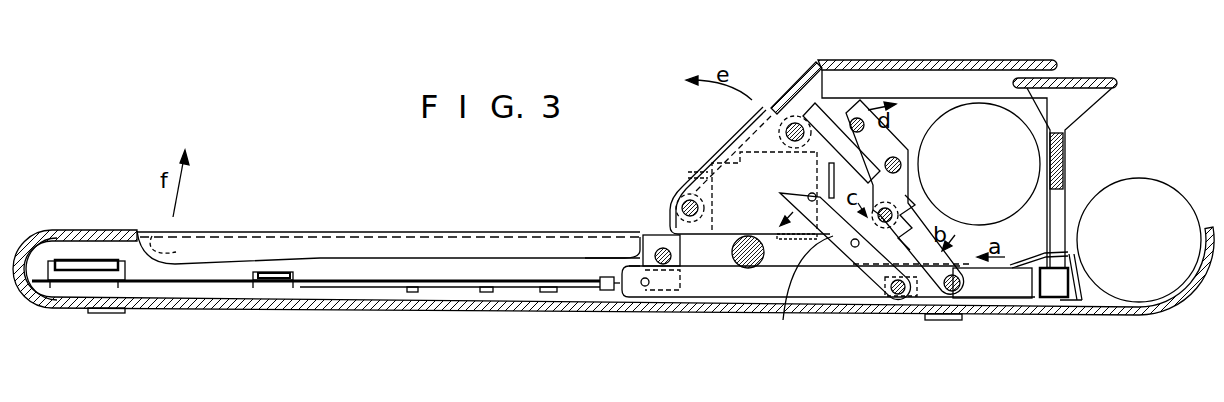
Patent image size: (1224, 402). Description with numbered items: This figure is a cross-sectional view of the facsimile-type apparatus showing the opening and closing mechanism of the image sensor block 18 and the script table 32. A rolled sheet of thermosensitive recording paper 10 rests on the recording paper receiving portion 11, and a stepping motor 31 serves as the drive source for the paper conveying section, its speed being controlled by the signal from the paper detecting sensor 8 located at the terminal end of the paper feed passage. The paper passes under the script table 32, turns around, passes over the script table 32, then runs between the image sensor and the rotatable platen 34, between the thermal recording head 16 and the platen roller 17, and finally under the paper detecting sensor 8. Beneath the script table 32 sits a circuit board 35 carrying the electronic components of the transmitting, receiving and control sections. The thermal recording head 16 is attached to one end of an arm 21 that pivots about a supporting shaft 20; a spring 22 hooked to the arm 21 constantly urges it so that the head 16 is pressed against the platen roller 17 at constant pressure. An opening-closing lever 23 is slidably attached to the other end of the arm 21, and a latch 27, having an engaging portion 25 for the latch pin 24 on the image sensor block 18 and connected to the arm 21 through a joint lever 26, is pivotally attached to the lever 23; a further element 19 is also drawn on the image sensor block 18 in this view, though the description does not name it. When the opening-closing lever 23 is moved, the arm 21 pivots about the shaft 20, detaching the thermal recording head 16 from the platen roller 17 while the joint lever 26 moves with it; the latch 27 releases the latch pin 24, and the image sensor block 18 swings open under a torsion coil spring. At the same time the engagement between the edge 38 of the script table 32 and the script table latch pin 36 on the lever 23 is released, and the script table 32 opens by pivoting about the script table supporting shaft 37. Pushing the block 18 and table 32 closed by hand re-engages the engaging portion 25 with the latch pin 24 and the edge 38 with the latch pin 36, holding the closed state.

The paper detecting sensor 8 is at (805, 76).
The thermosensitive recording paper 10 is at (1157, 188).
The recording paper receiving portion 11 is at (1178, 302).
The thermal recording head 16 is at (826, 126).
The platen roller 17 is at (788, 122).
The image sensor block 18 is at (726, 150).
The screw 19 is at (681, 200).
The supporting shaft 20 is at (897, 157).
The arm 21 is at (946, 293).
The spring 22 is at (922, 160).
The opening-closing lever 23 is at (832, 292).
The latch pin 24 is at (810, 193).
The engaging portion 25 is at (795, 211).
The joint lever 26 is at (858, 248).
The latch 27 is at (799, 290).
The stepping motor 31 is at (1028, 163).
The script table 32 is at (360, 232).
The rotatable platen 34 is at (732, 252).
The circuit board 35 is at (387, 290).
The script table latch pin 36 is at (645, 287).
The script table supporting shaft 37 is at (662, 248).
The edge 38 is at (604, 258).